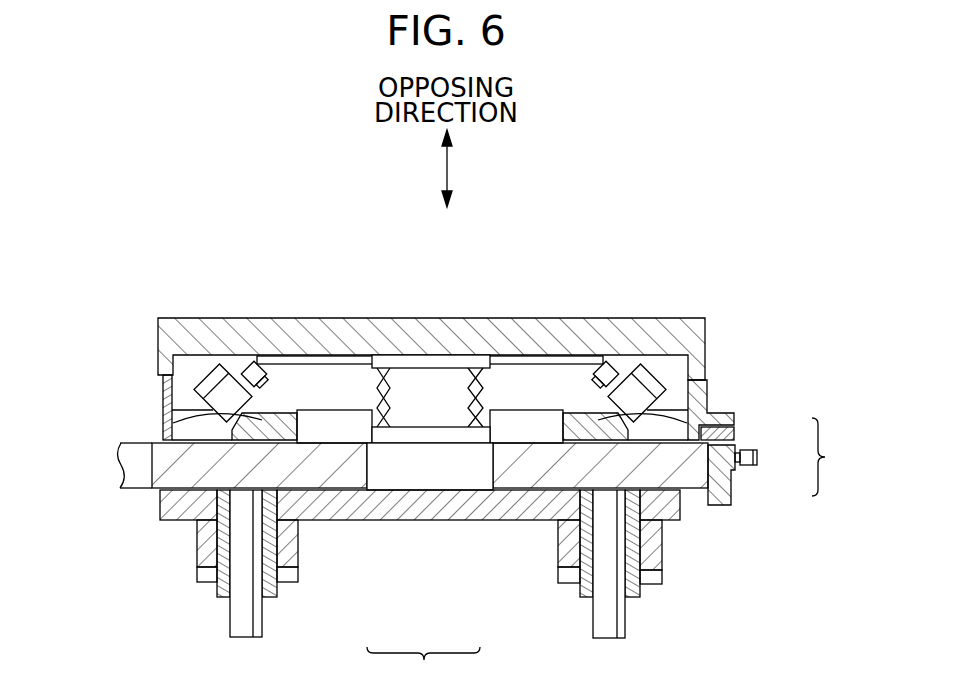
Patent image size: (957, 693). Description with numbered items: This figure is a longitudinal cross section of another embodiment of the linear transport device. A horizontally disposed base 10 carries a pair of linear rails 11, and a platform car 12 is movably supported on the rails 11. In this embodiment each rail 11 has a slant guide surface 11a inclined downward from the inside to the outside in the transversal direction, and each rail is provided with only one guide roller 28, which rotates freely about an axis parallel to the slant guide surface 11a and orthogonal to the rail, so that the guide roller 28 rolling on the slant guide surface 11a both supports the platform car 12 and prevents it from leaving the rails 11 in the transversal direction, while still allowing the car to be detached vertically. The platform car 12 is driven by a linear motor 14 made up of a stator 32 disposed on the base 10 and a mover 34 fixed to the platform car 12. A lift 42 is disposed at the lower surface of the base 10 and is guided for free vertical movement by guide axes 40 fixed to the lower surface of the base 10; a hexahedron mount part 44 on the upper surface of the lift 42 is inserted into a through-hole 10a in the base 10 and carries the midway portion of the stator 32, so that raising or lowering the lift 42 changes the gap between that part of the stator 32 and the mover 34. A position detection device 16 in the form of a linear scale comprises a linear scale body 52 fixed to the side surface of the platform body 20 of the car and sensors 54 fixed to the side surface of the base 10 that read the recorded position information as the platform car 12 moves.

The base 10 is at (192, 482).
The through-hole 10a is at (382, 476).
The linear rail 11 is at (277, 427).
The slant guide surface 11a is at (163, 421).
The platform car 12 is at (522, 318).
The linear motor 14 is at (423, 670).
The position detection device 16 is at (838, 457).
The platform body 20 is at (437, 348).
The guide roller 28 is at (222, 388).
The stator 32 is at (402, 443).
The mover 34 is at (452, 408).
The guide axis 40 is at (240, 613).
The lift 42 is at (663, 553).
The mount part 44 is at (467, 473).
The linear scale body 52 is at (735, 431).
The sensor 54 is at (731, 491).